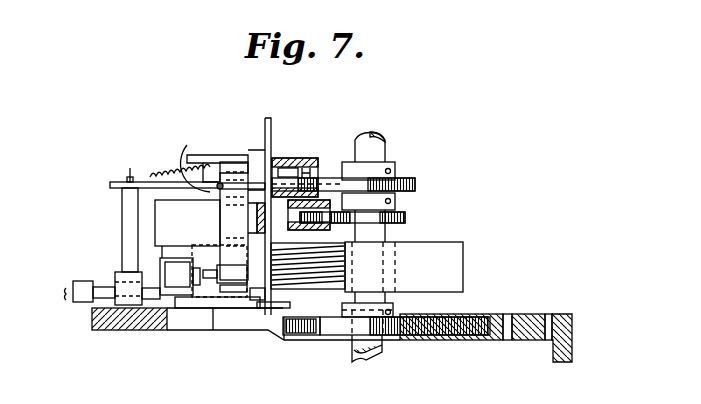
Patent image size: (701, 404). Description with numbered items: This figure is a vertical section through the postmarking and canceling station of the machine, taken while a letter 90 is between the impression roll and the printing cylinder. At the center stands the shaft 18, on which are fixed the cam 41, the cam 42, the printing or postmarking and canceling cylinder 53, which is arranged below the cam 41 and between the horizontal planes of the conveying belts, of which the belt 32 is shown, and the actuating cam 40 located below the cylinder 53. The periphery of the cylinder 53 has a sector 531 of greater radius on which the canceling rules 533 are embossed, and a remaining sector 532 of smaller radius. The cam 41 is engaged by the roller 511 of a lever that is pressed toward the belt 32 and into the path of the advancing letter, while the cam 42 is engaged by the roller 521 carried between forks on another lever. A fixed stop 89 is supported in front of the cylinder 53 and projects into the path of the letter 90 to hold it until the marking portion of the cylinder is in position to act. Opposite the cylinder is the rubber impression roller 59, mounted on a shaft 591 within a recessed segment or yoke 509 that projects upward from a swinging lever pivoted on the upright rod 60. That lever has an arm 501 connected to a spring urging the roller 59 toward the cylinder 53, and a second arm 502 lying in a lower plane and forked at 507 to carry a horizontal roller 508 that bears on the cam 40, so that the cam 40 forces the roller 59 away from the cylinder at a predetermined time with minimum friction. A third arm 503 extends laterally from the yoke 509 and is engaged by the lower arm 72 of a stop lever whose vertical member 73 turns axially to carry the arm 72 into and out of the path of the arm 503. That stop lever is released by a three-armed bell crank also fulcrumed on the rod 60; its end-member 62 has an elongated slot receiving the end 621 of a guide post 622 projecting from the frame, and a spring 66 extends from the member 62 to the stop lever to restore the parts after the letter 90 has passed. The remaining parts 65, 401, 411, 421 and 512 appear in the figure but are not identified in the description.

The shaft 18 is at (462, 338).
The belt 32 is at (267, 190).
The actuating cam 40 is at (392, 332).
The cam 41 is at (407, 218).
The cam 42 is at (416, 185).
The printing cylinder 53 is at (404, 267).
The impression roller 59 is at (262, 291).
The upright rod 60 is at (197, 157).
The end-arm of bell crank lever 62 is at (118, 185).
The spring link 65 is at (186, 148).
The spring 66 is at (175, 176).
The lower arm of stop lever 72 is at (246, 324).
The vertical member of stop lever 73 is at (241, 221).
The fixed stop 89 is at (285, 165).
The letter 90 is at (272, 121).
The collar 401 is at (396, 308).
The collar 411 is at (398, 205).
The collar 421 is at (400, 170).
The arm of impression roller lever 501 is at (106, 286).
The second arm of impression roller lever 502 is at (232, 314).
The third arm 503 is at (172, 266).
The fork 507 is at (318, 334).
The horizontal roller 508 is at (305, 333).
The yoke 509 is at (187, 229).
The roller 511 is at (335, 215).
The bearing 512 is at (306, 216).
The roller 521 is at (322, 175).
The sector 531 is at (294, 298).
The remaining sector 532 is at (412, 268).
The canceling rules 533 is at (346, 257).
The shaft 591 is at (228, 300).
The end of guide post 621 is at (129, 165).
The guide post 622 is at (122, 206).